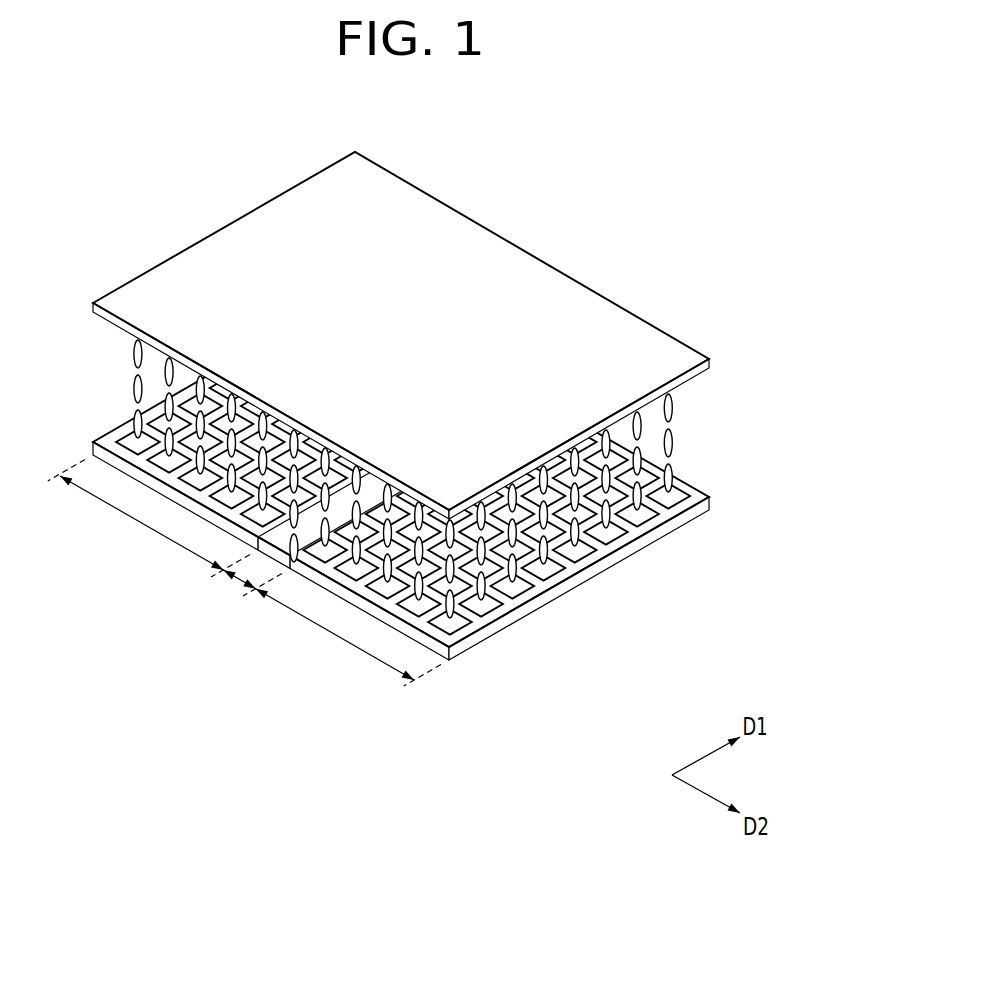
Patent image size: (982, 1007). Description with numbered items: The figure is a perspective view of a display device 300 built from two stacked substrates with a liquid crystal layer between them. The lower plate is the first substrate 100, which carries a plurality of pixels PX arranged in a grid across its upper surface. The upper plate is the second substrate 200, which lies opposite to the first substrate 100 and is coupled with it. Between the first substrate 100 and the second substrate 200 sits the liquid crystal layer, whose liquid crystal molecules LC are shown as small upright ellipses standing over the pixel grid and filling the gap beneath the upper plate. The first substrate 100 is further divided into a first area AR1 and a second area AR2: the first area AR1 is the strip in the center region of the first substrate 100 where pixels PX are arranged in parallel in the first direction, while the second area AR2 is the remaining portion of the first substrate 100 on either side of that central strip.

The display device 300 is at (441, 398).
The second substrate 200 is at (710, 365).
The first substrate 100 is at (607, 562).
The liquid crystal molecules LC is at (672, 443).
The pixels PX is at (488, 607).
The first area AR1 is at (238, 580).
The second area AR2 is at (244, 573).